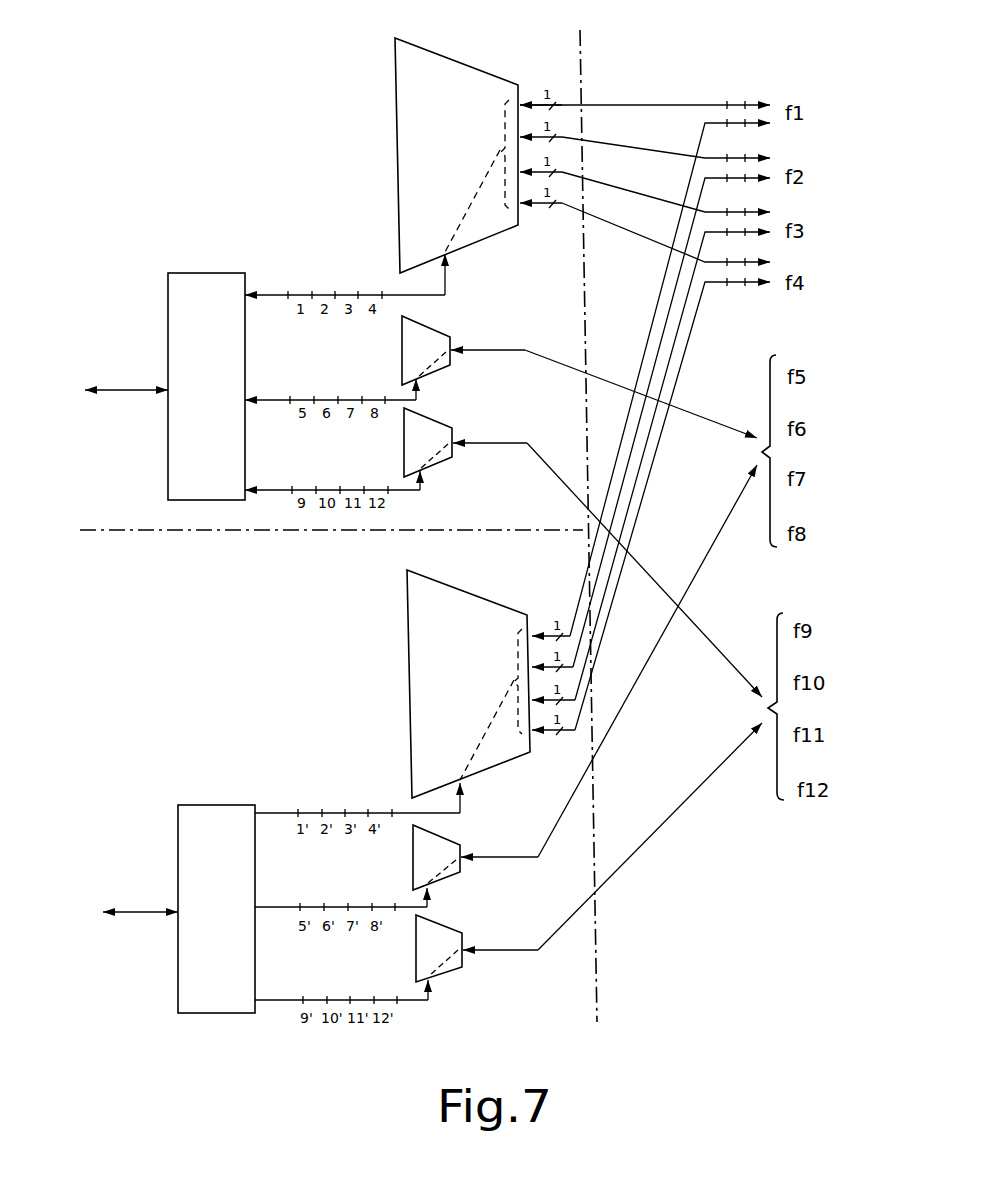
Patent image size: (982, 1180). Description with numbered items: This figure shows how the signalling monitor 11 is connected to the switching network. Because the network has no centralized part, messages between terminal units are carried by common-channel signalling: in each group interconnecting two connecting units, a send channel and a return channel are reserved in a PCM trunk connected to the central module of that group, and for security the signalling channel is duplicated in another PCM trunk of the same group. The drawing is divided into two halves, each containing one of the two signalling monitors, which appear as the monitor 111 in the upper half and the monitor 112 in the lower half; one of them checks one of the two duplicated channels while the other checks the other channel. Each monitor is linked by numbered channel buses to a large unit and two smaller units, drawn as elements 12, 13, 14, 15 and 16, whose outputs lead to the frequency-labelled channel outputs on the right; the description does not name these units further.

The signalling monitor 11 is at (467, 63).
The converter 1_2 12 is at (438, 332).
The converter 1_3 13 is at (440, 424).
The converter 1_4 14 is at (465, 595).
The converter 1_5 15 is at (462, 845).
The converter 1_6 16 is at (464, 937).
The signalling monitor 11_1 111 is at (172, 478).
The signalling monitor 11_2 112 is at (182, 1005).